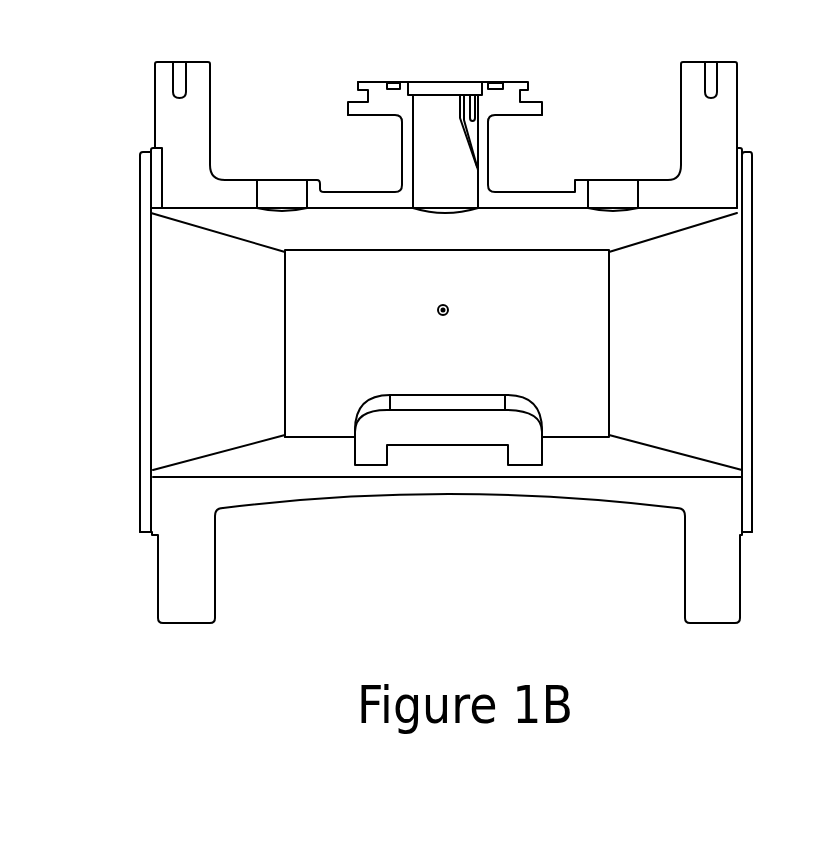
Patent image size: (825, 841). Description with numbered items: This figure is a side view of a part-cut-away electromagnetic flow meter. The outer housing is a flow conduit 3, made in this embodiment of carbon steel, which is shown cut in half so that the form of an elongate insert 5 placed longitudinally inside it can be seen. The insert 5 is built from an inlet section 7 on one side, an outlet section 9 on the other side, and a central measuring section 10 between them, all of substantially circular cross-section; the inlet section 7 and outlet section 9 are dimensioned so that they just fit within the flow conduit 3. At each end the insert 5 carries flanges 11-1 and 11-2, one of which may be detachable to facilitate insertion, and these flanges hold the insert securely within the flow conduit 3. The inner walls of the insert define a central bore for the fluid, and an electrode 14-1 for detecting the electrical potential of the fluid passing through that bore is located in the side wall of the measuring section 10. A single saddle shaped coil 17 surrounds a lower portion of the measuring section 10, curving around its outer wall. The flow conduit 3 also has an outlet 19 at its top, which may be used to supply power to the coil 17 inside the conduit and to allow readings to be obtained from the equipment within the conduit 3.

The flow conduit 3 is at (545, 200).
The outlet 19 is at (530, 92).
The inlet section 7 is at (168, 375).
The outlet section 9 is at (725, 338).
The central measuring section 10 is at (570, 418).
The electrode 14-1 is at (450, 306).
The saddle shaped coil 17 is at (453, 422).
The elongate insert 5 is at (323, 414).
The flange 11-1 is at (150, 475).
The flange 11-2 is at (752, 493).